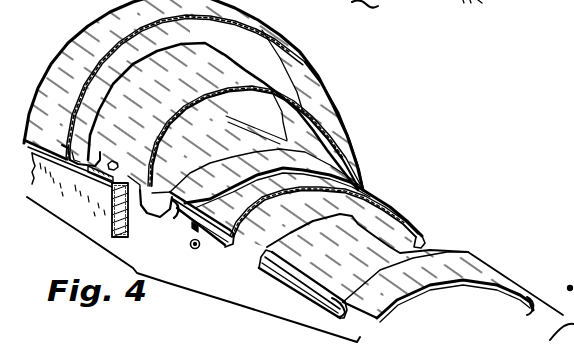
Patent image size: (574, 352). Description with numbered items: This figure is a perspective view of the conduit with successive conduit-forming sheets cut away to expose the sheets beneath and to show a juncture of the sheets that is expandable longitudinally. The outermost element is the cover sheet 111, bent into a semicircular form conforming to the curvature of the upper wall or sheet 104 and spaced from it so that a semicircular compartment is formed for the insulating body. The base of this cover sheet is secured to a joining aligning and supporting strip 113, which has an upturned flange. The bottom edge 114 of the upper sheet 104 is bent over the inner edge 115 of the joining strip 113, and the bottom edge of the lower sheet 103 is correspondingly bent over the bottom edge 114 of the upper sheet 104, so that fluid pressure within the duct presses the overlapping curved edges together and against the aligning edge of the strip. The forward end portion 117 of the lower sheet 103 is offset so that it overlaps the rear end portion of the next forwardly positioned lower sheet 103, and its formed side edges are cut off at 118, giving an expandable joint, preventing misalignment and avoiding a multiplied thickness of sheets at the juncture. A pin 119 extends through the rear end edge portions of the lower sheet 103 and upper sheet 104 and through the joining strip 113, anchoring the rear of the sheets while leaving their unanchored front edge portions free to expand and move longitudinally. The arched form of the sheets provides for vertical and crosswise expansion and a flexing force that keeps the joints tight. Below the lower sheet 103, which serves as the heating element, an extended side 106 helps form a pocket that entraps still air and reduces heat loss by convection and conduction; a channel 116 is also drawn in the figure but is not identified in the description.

The lower sheet 103 is at (244, 119).
The upper wall or sheet 104 is at (237, 61).
The extended side 106 is at (119, 231).
The cover sheet 111 is at (65, 51).
The joining aligning and supporting strip 113 is at (100, 156).
The bottom edge of sheet 104 114 is at (160, 188).
The inner edge of joining strip 115 is at (121, 170).
The channel 116 is at (167, 212).
The forward end portion of lower sheet 117 is at (255, 173).
The cut off edge 118 is at (177, 212).
The pin 119 is at (192, 246).